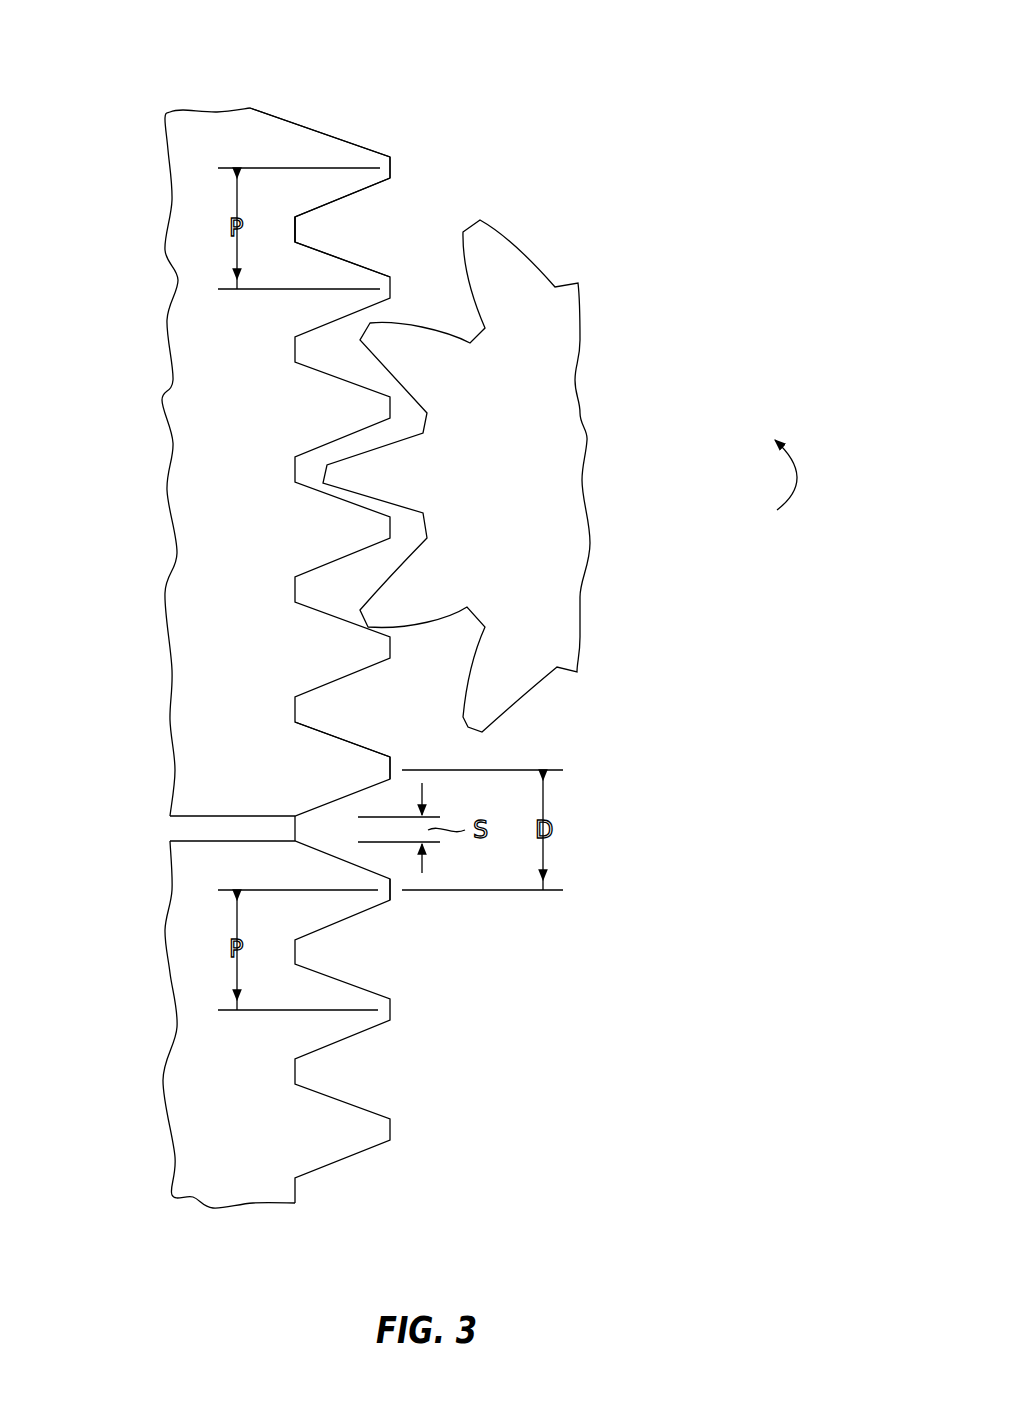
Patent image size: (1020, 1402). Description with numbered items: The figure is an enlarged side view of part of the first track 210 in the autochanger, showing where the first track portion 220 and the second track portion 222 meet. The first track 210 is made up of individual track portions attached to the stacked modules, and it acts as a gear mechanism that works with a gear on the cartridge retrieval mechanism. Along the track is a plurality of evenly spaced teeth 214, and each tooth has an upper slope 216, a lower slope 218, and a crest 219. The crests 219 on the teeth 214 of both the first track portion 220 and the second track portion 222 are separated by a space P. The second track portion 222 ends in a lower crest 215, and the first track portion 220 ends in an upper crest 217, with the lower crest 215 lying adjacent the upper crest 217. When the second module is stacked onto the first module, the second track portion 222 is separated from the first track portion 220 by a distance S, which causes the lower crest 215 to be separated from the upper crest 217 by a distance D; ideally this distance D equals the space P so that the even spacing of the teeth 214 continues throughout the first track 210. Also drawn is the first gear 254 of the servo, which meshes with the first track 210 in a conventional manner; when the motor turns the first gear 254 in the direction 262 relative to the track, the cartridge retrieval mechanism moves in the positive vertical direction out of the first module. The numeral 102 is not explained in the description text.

The tooth flank 102 is at (343, 735).
The first track 210 is at (247, 75).
The teeth 214 is at (392, 173).
The lower crest 215 is at (392, 762).
The upper slope 216 is at (370, 145).
The upper crest 217 is at (392, 900).
The lower slope 218 is at (343, 200).
The crest 219 is at (392, 163).
The first track portion 220 is at (190, 1030).
The second track portion 222 is at (178, 492).
The first gear 254 is at (572, 442).
The direction 262 is at (797, 477).